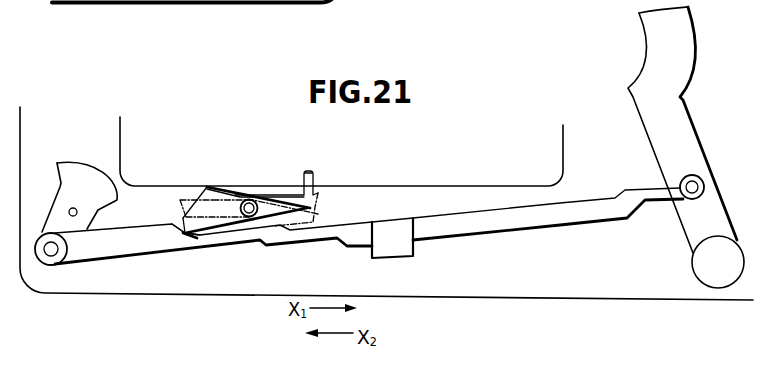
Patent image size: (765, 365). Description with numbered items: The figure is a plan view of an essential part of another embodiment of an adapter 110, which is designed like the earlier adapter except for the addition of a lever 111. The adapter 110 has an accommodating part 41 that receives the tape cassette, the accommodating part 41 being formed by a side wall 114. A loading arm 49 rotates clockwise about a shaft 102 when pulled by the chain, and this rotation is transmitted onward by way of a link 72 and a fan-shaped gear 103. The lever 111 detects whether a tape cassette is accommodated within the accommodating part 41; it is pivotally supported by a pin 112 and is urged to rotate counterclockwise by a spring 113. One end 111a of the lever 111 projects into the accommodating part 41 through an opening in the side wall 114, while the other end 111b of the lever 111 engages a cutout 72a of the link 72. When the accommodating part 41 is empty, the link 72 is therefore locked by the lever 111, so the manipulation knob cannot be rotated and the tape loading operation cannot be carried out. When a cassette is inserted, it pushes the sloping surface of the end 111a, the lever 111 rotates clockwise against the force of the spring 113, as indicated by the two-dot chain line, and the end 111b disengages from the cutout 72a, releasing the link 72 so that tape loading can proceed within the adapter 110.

The adapter 110 is at (500, 105).
The accommodating part 41 is at (563, 145).
The loading arm 49 is at (633, 98).
The shaft 102 is at (715, 282).
The fan-shaped gear 103 is at (73, 170).
The link 72 is at (359, 235).
The cutout 72a is at (193, 233).
The side wall 114 is at (385, 185).
The lever 111 is at (272, 235).
The one end of the lever 111a is at (312, 176).
The another end of the lever 111b is at (218, 227).
The pin 112 is at (250, 218).
The spring 113 is at (232, 190).